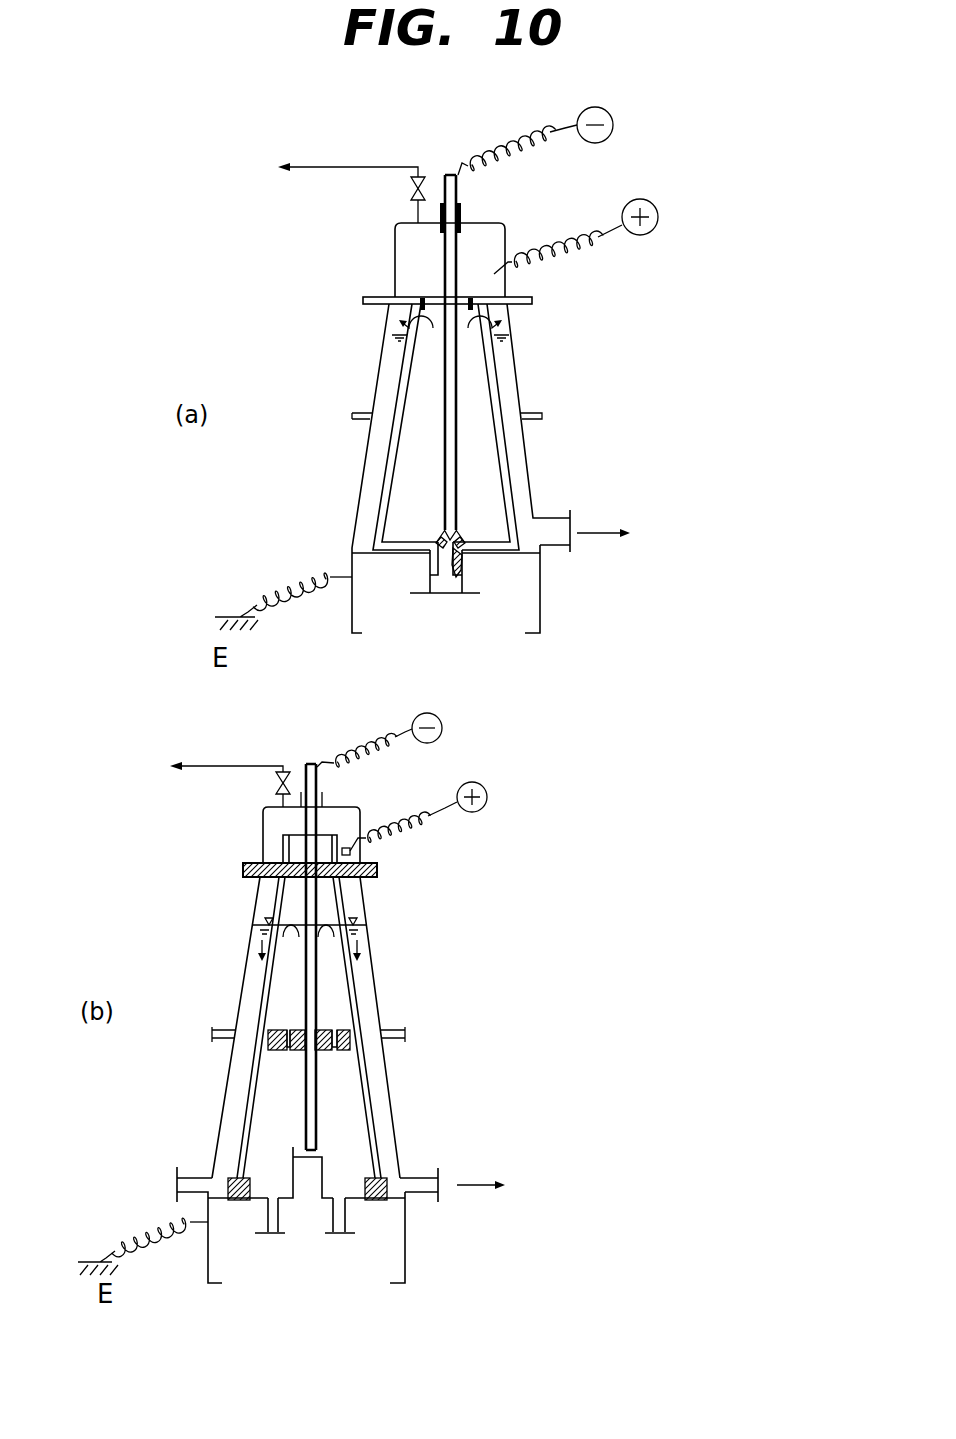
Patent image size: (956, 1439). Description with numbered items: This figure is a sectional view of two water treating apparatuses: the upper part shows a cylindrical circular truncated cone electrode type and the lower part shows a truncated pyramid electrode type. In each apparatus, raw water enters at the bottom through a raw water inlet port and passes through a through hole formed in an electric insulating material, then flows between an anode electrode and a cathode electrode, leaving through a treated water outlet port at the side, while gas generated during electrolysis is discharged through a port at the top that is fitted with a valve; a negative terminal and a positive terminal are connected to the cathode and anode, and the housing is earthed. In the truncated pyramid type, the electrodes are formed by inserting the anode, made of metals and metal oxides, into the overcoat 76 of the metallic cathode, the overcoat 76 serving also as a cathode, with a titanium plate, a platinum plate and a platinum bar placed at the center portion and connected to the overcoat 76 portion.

The overcoat 76 is at (368, 1005).